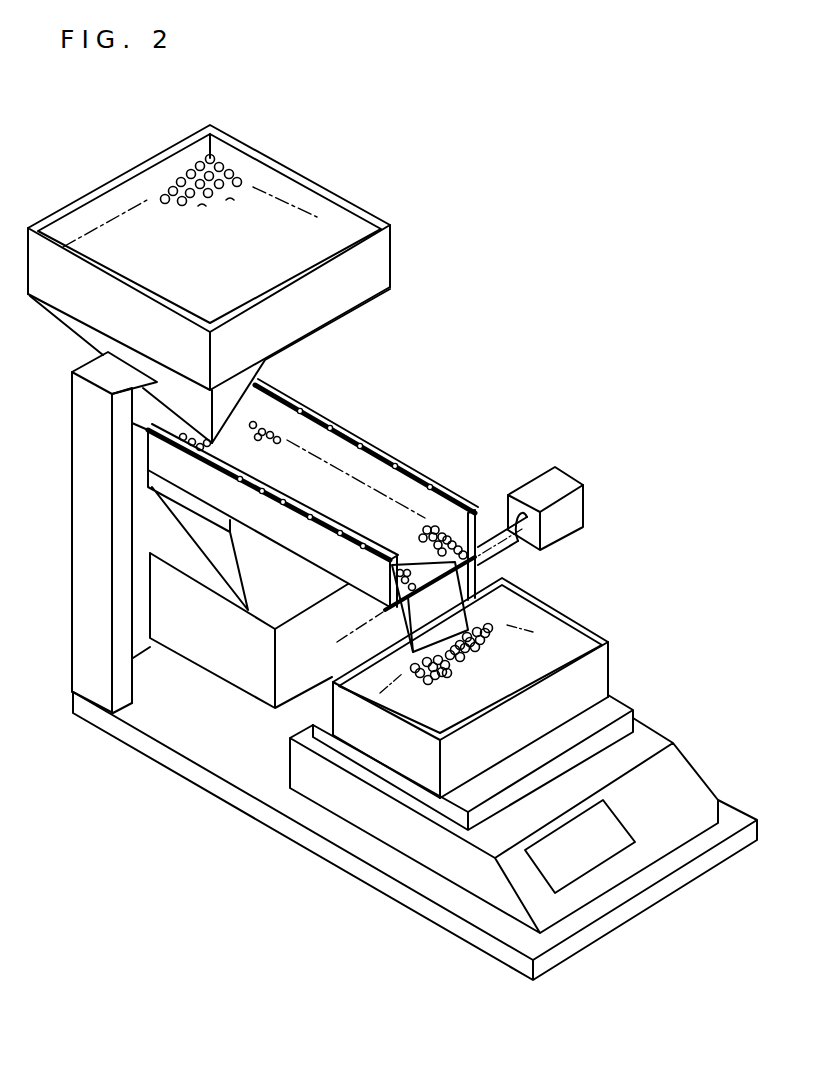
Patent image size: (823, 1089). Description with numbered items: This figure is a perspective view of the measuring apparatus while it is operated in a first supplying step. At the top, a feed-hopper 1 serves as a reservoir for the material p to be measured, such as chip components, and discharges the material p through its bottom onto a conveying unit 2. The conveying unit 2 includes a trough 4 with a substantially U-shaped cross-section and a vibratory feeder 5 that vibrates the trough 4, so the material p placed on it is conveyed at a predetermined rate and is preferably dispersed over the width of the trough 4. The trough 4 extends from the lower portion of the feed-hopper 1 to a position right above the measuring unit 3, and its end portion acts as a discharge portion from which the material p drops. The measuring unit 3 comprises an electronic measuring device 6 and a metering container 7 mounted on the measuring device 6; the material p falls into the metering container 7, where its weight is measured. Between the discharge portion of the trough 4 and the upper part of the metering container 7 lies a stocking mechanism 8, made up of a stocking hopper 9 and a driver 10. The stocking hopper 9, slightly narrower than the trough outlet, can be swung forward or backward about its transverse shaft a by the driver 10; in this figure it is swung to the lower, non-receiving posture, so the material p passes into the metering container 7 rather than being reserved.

The feed-hopper 1 is at (108, 178).
The material p is at (233, 170).
The conveying unit 2 is at (363, 437).
The trough 4 is at (310, 418).
The vibratory feeder 5 is at (165, 530).
The driver 10 is at (565, 485).
The stocking mechanism 8 is at (480, 565).
The stocking hopper 9 is at (433, 637).
The transverse shaft a is at (347, 635).
The metering container 7 is at (605, 674).
The measuring unit 3 is at (653, 710).
The measuring device 6 is at (417, 852).